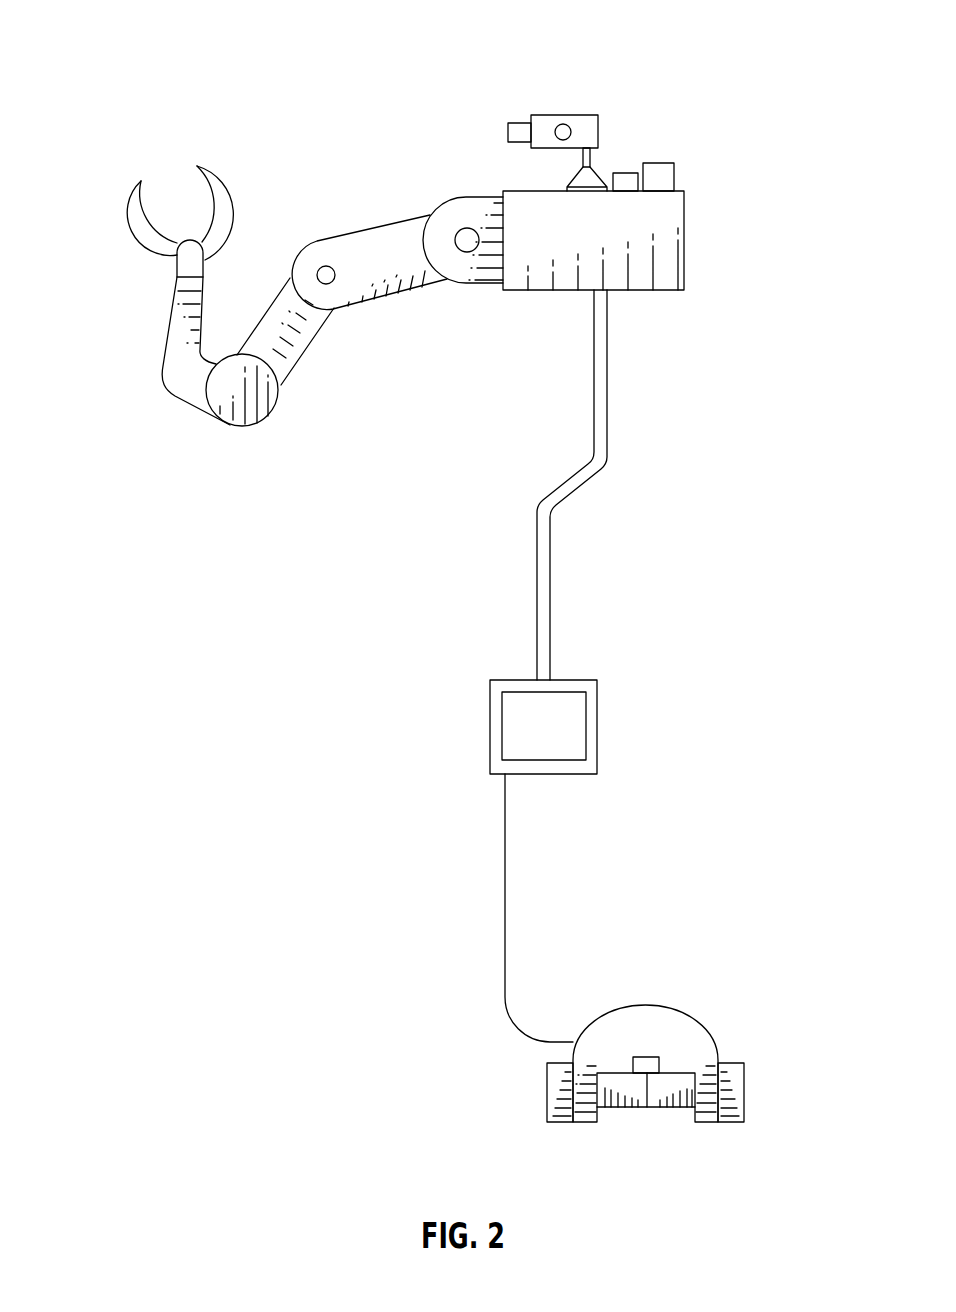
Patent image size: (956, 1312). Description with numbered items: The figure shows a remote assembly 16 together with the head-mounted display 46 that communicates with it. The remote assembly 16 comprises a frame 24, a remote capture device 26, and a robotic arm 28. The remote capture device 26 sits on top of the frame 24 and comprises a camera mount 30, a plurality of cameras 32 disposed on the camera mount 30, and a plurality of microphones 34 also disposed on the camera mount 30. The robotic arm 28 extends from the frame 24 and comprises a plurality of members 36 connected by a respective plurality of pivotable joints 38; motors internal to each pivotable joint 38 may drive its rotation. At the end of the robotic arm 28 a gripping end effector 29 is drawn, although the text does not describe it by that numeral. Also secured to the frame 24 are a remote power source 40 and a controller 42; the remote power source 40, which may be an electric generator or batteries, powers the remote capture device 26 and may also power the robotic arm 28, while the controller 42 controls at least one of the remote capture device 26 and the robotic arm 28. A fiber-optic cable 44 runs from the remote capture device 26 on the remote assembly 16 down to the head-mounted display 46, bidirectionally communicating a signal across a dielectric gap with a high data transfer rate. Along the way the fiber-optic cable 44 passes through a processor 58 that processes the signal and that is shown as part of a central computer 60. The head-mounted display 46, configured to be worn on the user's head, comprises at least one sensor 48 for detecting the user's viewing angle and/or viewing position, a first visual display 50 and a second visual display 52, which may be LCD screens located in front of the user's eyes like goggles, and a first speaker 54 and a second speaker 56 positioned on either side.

The remote assembly 16 is at (328, 165).
The frame 24 is at (557, 292).
The remote capture device 26 is at (547, 104).
The robotic arm 28 is at (124, 320).
The gripper claws 29 is at (137, 243).
The camera mount 30 is at (600, 116).
The camera 32 is at (508, 130).
The microphone 34 is at (569, 125).
The member 36 is at (187, 405).
The pivotable joint 38 is at (270, 417).
The remote power source 40 is at (676, 177).
The controller 42 is at (625, 180).
The fiber-optic cable 44 is at (608, 410).
The head-mounted display 46 is at (682, 1010).
The sensor 48 is at (647, 1057).
The first visual display 50 is at (623, 1107).
The second visual display 52 is at (673, 1107).
The first speaker 54 is at (547, 1092).
The second speaker 56 is at (744, 1092).
The processor 58 is at (570, 714).
The central computer 60 is at (597, 726).